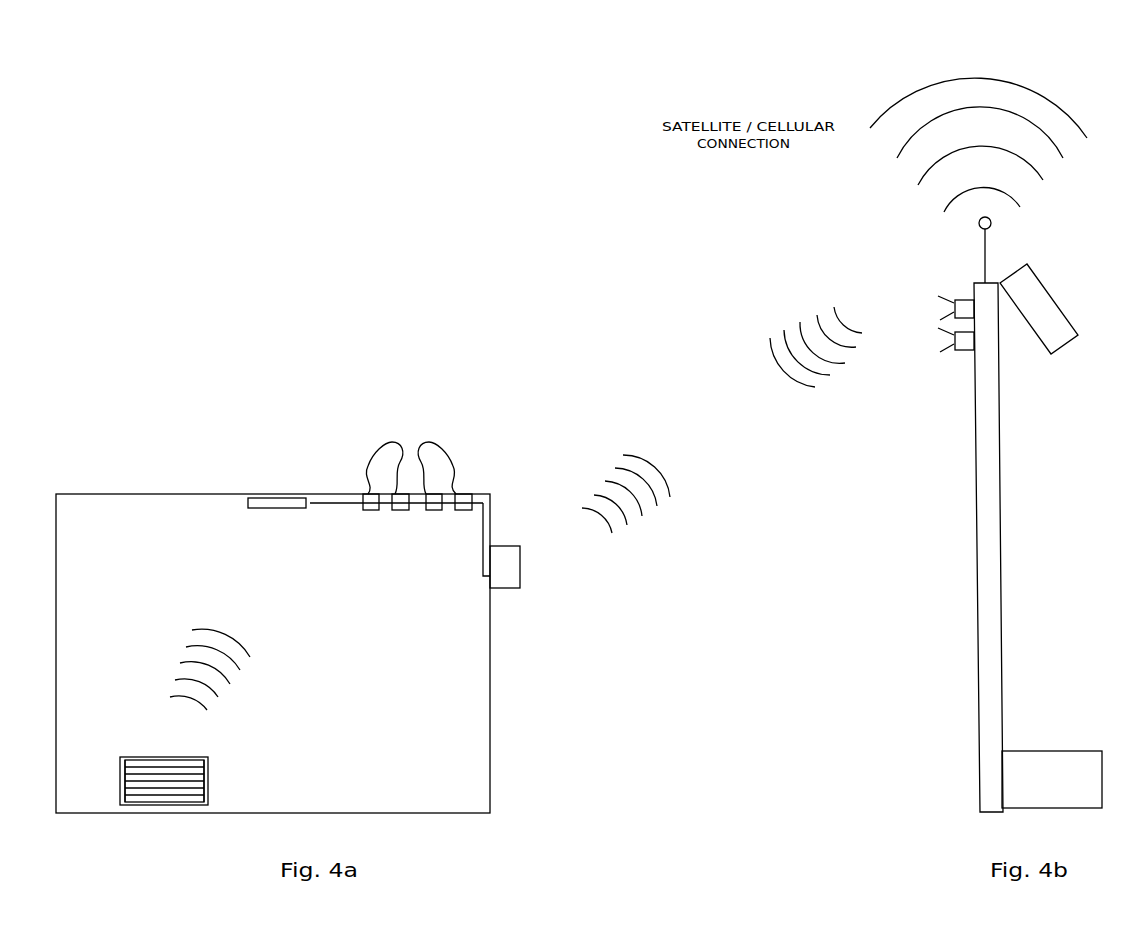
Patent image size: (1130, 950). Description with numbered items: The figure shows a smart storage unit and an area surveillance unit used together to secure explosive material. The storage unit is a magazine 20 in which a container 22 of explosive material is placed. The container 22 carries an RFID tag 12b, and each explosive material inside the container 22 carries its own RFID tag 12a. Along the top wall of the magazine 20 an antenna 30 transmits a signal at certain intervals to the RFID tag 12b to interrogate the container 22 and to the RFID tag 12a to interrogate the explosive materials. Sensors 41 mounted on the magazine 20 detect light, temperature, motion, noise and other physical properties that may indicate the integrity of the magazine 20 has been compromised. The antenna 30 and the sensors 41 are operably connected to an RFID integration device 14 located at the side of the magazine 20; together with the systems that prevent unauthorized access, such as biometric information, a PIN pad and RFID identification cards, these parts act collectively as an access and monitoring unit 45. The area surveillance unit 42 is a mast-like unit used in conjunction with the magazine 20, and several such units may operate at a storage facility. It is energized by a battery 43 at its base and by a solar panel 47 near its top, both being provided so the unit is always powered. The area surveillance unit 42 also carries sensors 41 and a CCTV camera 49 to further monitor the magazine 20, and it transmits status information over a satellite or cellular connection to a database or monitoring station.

In FIG. 4A, the magazine 20 is at (132, 487).
In FIG. 4A, the antenna 30 is at (250, 508).
In FIG. 4A, the access and monitoring unit 45 is at (492, 517).
In FIG. 4A, the sensors 41 is at (417, 473).
In FIG. 4B, the sensors 41 is at (963, 352).
In FIG. 4A, the RFID integration device 14 is at (520, 578).
In FIG. 4A, the container 22 is at (208, 778).
In FIG. 4A, the RFID tag 12a is at (203, 756).
In FIG. 4A, the RFID tag 12b is at (123, 757).
In FIG. 4B, the area surveillance unit 42 is at (978, 537).
In FIG. 4B, the solar panel 47 is at (1048, 300).
In FIG. 4B, the CCTV camera 49 is at (955, 302).
In FIG. 4B, the battery 43 is at (1060, 752).